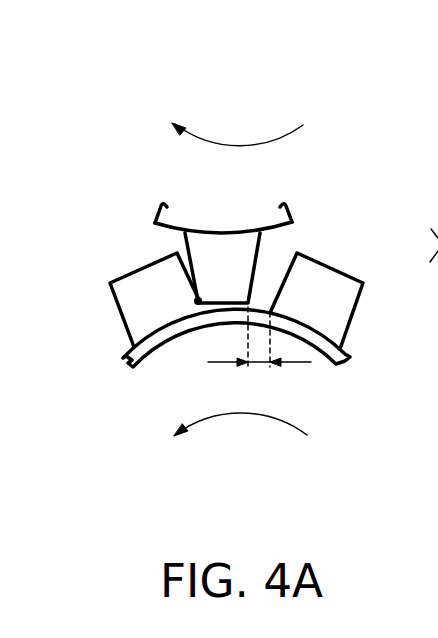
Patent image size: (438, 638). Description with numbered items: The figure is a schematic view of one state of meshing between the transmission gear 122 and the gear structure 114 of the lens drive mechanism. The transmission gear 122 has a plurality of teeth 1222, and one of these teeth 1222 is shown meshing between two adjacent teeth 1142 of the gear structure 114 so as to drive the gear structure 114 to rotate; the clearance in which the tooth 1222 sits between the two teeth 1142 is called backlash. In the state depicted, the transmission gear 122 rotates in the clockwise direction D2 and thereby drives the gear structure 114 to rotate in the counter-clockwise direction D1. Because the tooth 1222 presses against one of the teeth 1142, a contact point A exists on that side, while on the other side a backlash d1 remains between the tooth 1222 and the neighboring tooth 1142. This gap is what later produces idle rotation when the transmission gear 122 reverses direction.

The gear structure 114 is at (349, 360).
The teeth of the gear structure 1142 is at (131, 311).
The transmission gear 122 is at (158, 221).
The tooth of the transmission gear 1222 is at (258, 242).
The contact point A is at (196, 304).
The backlash d1 is at (259, 348).
The counter-clockwise direction D1 is at (238, 414).
The clockwise direction D2 is at (240, 146).